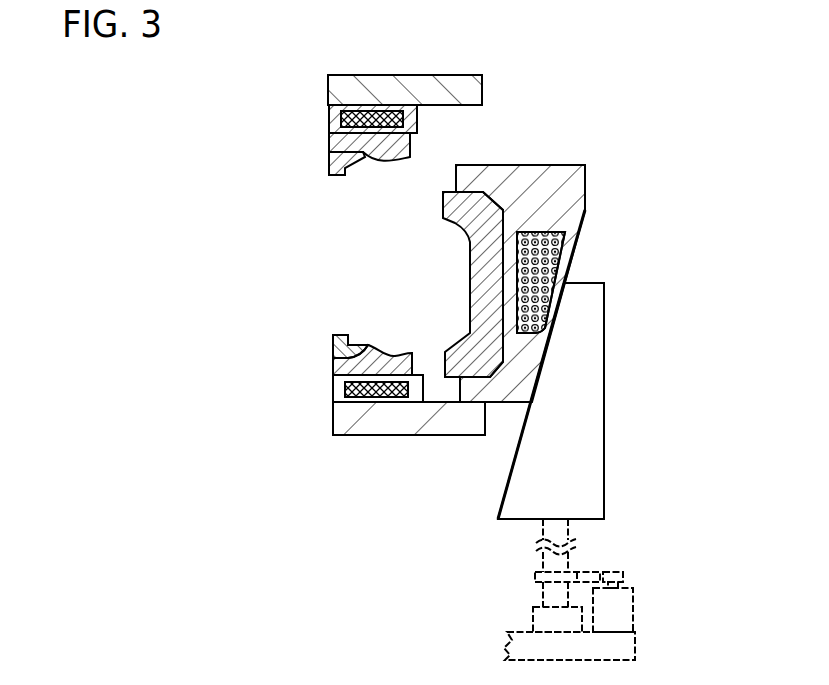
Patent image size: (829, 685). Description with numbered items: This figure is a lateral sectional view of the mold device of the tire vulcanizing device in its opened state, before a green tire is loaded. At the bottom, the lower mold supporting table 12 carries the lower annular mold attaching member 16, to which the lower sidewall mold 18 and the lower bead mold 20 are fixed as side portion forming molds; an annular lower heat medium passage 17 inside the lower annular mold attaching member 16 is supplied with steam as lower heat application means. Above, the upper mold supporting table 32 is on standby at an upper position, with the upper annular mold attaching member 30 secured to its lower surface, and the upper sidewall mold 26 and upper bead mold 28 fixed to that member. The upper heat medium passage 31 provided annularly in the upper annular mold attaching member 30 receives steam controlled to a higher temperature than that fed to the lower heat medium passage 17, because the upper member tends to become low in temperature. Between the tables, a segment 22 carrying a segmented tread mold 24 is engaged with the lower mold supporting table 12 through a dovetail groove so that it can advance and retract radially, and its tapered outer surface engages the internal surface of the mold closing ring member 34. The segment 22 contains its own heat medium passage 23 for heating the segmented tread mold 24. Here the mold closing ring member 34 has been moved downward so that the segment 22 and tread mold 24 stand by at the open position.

The lower mold supporting table 12 is at (407, 436).
The lower annular mold attaching member 16 is at (338, 388).
The lower heat medium passage 17 is at (394, 382).
The lower sidewall mold 18 is at (332, 358).
The lower bead mold 20 is at (332, 337).
The segment 22 is at (570, 207).
The heat medium passage 23 is at (557, 257).
The segmented tread mold 24 is at (469, 247).
The upper sidewall mold 26 is at (332, 143).
The upper bead mold 28 is at (332, 168).
The upper annular mold attaching member 30 is at (332, 122).
The upper heat medium passage 31 is at (390, 128).
The upper mold supporting table 32 is at (337, 87).
The mold closing ring member 34 is at (592, 418).